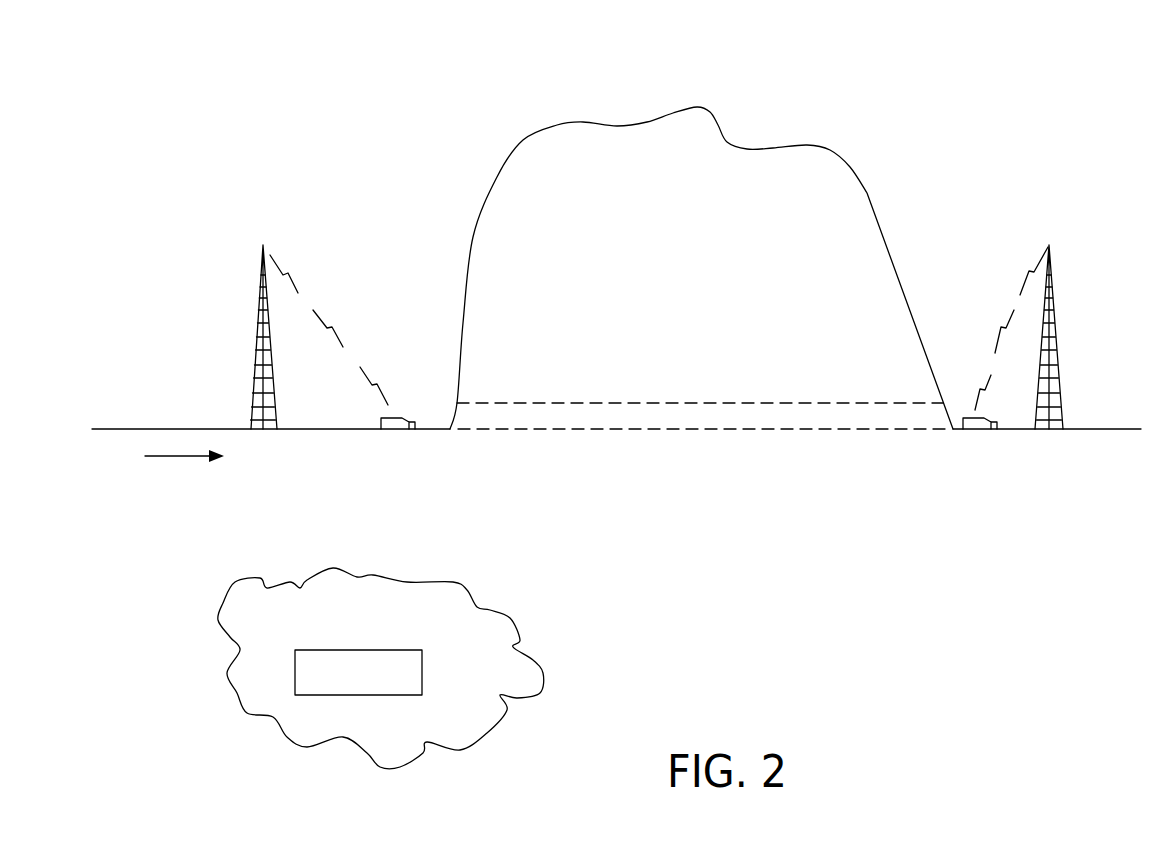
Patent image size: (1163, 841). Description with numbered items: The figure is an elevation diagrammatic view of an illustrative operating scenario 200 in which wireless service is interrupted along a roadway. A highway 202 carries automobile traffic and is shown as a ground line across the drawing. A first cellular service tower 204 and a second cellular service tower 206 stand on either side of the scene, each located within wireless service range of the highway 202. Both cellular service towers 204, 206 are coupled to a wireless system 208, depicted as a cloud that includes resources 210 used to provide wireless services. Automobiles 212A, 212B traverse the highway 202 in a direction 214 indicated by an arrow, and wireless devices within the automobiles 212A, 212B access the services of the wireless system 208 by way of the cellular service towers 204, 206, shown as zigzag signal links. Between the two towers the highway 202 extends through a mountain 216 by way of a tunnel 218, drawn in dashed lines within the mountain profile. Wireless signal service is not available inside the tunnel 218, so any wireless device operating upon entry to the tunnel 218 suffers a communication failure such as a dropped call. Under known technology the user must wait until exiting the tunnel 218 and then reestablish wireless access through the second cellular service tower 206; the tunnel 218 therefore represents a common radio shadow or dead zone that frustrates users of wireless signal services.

The operating scenario 200 is at (889, 70).
The highway 202 is at (159, 429).
The first cellular service tower 204 is at (257, 328).
The second cellular service tower 206 is at (1054, 327).
The wireless system 208 is at (457, 582).
The resources 210 is at (363, 695).
The automobile 212A is at (394, 426).
The automobile 212B is at (977, 429).
The direction 214 is at (173, 457).
The mountain 216 is at (862, 178).
The tunnel 218 is at (660, 423).